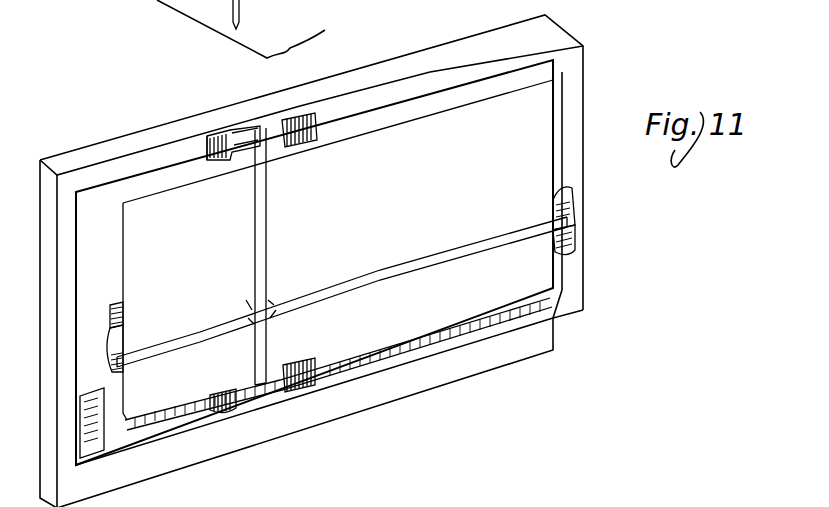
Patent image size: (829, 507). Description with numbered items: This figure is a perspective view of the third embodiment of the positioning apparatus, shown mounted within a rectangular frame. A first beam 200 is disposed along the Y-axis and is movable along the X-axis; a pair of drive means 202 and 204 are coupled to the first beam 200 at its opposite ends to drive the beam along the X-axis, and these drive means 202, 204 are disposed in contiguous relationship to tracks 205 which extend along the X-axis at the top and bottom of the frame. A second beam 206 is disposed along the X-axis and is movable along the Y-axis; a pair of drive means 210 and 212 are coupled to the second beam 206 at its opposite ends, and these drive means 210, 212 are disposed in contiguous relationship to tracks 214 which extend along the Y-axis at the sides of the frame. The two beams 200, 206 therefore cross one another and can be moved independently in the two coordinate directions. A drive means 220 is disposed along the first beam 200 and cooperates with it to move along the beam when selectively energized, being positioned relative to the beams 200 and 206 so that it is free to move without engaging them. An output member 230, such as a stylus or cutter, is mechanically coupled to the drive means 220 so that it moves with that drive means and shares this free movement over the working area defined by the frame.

The first beam 200 is at (268, 222).
The drive means 202 is at (245, 128).
The drive means 204 is at (227, 410).
The tracks 205 is at (300, 116).
The second beam 206 is at (385, 268).
The drive means 210 is at (553, 237).
The drive means 212 is at (122, 336).
The tracks 214 is at (567, 193).
The drive means 220 is at (264, 14).
The output member 230 is at (233, 12).